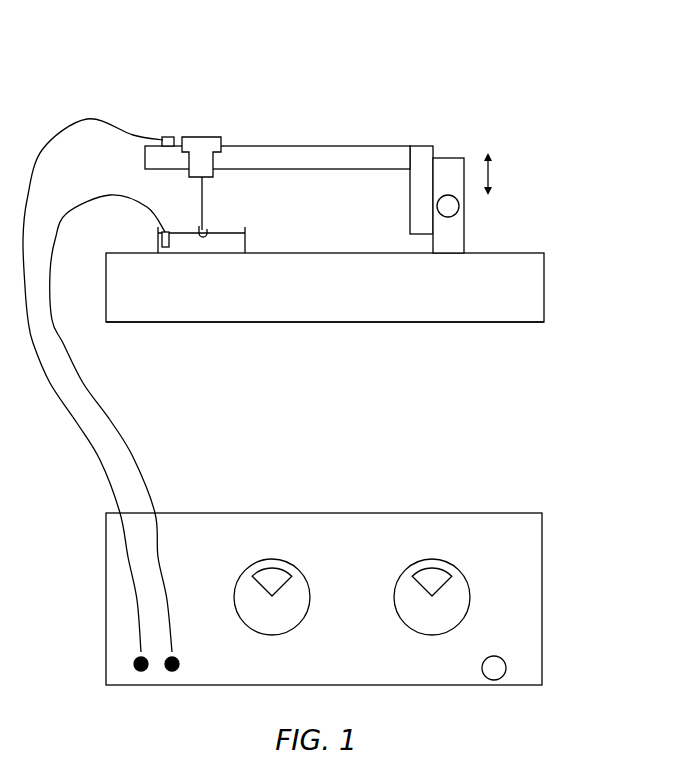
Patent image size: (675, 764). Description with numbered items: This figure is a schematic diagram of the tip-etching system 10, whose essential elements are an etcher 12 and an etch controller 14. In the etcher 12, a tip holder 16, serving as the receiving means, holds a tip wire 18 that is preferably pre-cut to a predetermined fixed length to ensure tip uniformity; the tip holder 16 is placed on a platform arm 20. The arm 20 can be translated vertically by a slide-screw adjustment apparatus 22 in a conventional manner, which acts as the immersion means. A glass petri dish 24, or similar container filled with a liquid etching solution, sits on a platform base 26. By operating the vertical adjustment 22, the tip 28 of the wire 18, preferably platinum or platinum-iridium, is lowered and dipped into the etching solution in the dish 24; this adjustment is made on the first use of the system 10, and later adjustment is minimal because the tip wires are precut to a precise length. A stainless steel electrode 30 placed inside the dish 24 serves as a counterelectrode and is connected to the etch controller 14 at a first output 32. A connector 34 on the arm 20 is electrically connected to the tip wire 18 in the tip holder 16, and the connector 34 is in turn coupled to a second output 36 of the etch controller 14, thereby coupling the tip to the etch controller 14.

The tip-etching system 10 is at (580, 83).
The etcher 12 is at (557, 302).
The etch controller 14 is at (558, 518).
The tip holder 16 is at (200, 137).
The tip wire 18 is at (200, 205).
The platform arm 20 is at (334, 146).
The slide-screw adjustment apparatus 22 is at (459, 206).
The glass petri dish 24 is at (245, 247).
The platform base 26 is at (443, 323).
The tip 28 is at (214, 236).
The stainless steel electrode 30 is at (160, 234).
The first output 32 is at (172, 671).
The connector 34 is at (168, 136).
The second output 36 is at (141, 671).